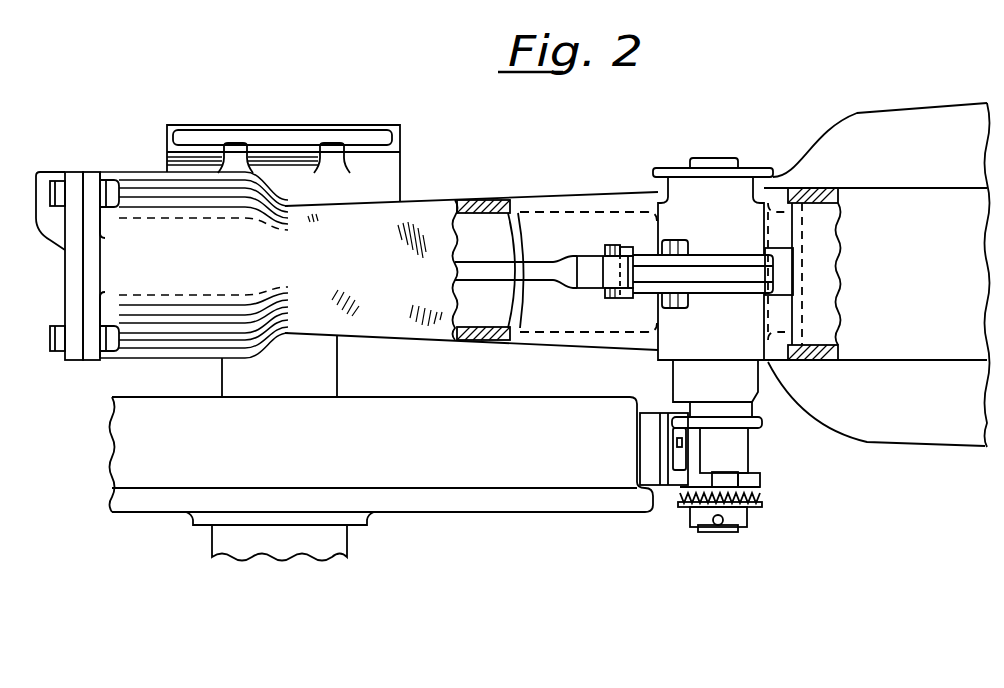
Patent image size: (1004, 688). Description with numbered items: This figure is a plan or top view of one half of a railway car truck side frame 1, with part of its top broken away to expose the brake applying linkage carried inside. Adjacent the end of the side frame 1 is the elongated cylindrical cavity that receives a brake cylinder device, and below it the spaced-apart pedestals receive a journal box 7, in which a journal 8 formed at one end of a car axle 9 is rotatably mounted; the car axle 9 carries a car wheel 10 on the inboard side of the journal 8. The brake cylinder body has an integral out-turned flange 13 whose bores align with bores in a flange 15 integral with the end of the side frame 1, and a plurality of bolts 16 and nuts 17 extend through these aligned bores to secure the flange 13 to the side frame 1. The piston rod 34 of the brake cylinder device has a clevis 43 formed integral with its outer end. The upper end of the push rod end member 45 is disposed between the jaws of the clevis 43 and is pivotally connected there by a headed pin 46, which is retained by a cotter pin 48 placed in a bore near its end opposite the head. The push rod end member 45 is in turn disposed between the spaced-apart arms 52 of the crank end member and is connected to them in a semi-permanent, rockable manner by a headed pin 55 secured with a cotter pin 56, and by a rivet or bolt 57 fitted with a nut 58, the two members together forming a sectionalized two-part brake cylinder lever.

The truck side frame 1 is at (430, 197).
The journal box 7 is at (386, 170).
The journal 8 is at (330, 356).
The car axle 9 is at (333, 544).
The car wheel 10 is at (513, 504).
The out-turned flange 13 is at (76, 150).
The flange 15 is at (91, 179).
The bolts 16 is at (109, 192).
The nuts 17 is at (50, 194).
The piston rod 34 is at (538, 268).
The clevis 43 is at (571, 262).
The push rod end member 45 is at (728, 273).
The headed pin 46 is at (616, 295).
The cotter pin 48 is at (614, 252).
The arms 52 is at (701, 258).
The headed pin 55 is at (624, 292).
The cotter pin 56 is at (624, 252).
The rivet or bolt 57 is at (672, 296).
The nut 58 is at (677, 242).